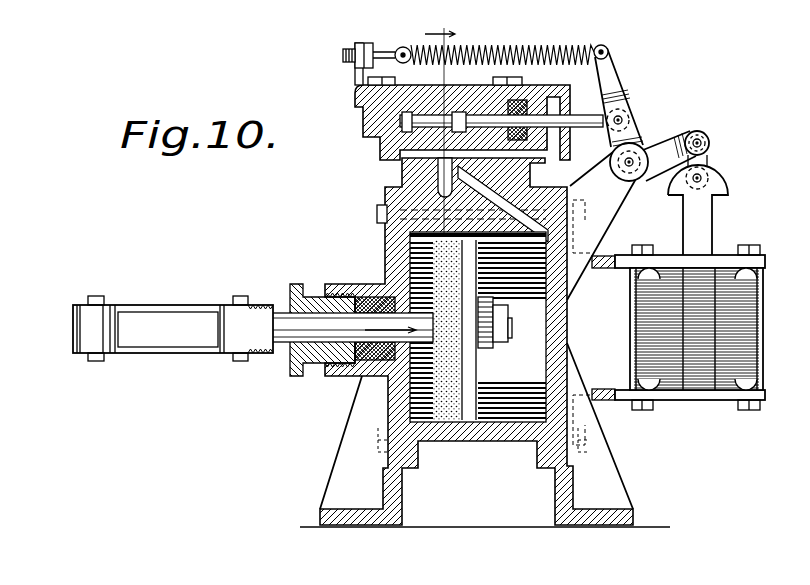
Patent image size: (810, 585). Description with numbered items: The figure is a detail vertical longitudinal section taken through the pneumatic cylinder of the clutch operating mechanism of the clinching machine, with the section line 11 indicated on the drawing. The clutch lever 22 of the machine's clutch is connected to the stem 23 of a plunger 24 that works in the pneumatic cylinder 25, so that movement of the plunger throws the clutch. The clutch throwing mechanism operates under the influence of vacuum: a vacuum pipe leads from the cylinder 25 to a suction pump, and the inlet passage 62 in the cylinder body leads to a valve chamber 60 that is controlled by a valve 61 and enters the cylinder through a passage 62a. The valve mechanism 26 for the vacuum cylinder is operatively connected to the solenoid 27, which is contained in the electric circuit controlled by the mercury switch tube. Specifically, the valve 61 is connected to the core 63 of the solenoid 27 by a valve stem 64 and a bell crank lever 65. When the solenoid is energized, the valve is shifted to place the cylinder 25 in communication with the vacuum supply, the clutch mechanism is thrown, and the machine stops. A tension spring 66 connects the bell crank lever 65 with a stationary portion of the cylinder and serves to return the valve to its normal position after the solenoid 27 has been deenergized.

The section line 11- 11 is at (440, 142).
The clutch lever 22 is at (75, 330).
The stem 23 is at (283, 322).
The plunger 24 is at (480, 372).
The pneumatic cylinder 25 is at (487, 430).
The valve mechanism 26 is at (478, 96).
The solenoid 27 is at (733, 372).
The valve chamber 60 is at (482, 112).
The valve 61 is at (376, 137).
The inlet passage 62 is at (382, 166).
The passage 62a is at (516, 199).
The core 63 is at (706, 215).
The valve stem 64 is at (587, 117).
The bell crank lever 65 is at (658, 135).
The tension spring 66 is at (498, 44).